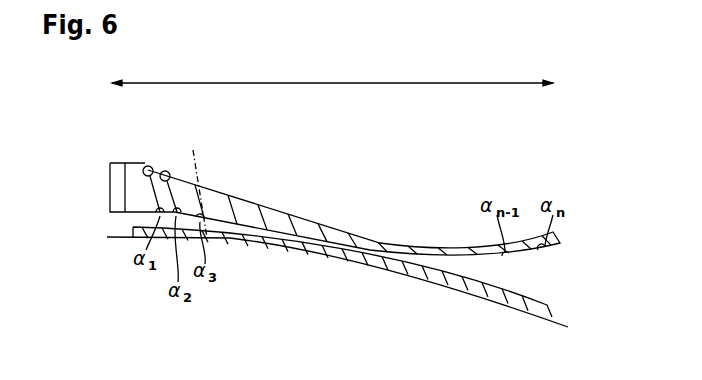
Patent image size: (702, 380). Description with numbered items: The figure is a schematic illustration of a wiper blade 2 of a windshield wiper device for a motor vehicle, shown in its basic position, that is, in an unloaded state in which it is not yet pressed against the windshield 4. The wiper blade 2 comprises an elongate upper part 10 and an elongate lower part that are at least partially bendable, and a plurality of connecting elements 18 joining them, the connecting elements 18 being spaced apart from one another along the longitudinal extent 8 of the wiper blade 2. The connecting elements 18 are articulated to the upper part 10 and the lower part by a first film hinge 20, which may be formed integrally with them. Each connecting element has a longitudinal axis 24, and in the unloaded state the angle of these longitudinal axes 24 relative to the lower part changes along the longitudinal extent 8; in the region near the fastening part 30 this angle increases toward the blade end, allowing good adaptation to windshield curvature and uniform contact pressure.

The wiper blade 2 is at (460, 184).
The windshield 4 is at (458, 284).
The longitudinal extent 8 is at (333, 80).
The upper part 10 is at (421, 240).
The connecting elements 18 is at (328, 242).
The first film hinge 20 is at (167, 171).
The longitudinal axes 24 is at (196, 180).
The fastening part 30 is at (118, 192).